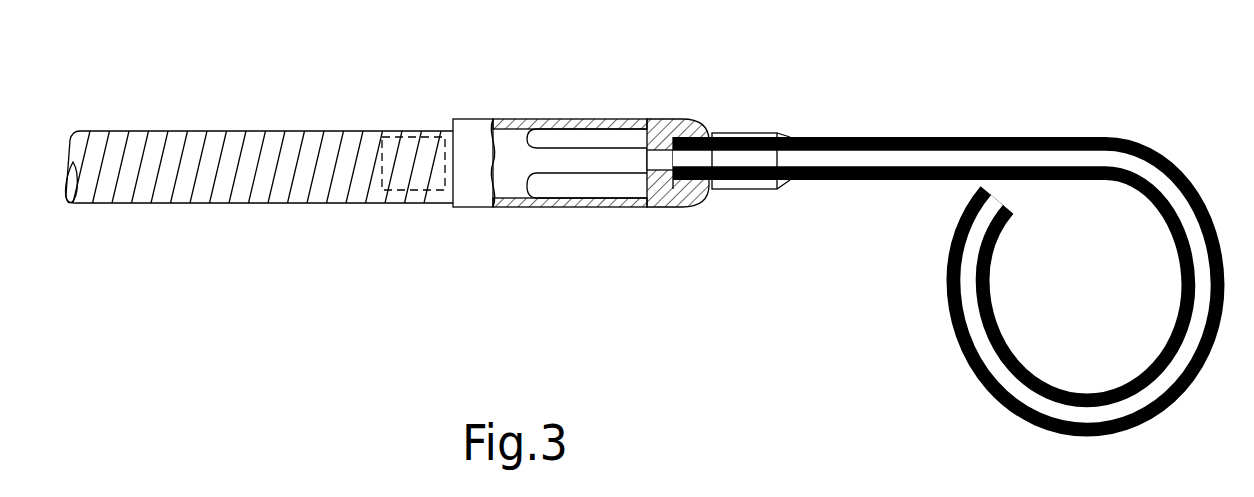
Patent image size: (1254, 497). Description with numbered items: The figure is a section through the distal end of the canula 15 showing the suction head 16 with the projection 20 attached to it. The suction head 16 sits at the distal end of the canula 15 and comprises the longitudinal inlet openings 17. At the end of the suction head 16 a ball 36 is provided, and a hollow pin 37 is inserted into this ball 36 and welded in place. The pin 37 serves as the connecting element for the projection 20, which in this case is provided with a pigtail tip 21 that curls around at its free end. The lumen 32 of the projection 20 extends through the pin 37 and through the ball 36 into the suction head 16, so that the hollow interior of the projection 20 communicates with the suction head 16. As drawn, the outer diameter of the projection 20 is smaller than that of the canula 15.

The canula 15 is at (97, 130).
The suction head 16 is at (513, 143).
The longitudinal inlet openings 17 is at (603, 138).
The projection 20 is at (967, 134).
The pigtail tip 21 is at (990, 387).
The lumen 32 is at (1040, 153).
The ball 36 is at (689, 128).
The hollow pin 37 is at (742, 158).